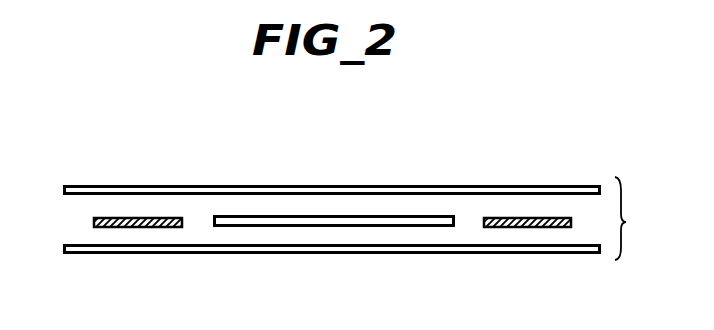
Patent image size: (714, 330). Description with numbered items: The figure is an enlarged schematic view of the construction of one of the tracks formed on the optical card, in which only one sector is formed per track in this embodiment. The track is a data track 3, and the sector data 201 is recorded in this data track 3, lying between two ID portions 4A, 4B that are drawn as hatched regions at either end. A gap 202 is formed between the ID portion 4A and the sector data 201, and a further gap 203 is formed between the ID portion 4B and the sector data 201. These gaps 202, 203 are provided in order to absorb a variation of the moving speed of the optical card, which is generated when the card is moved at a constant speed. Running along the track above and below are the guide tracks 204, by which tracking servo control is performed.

The data track 3 is at (630, 218).
The ID portion 4A is at (132, 216).
The ID portion 4B is at (525, 216).
The sector data 201 is at (313, 222).
The gap 202 is at (200, 222).
The gap 203 is at (469, 222).
The guide tracks 204 is at (393, 238).